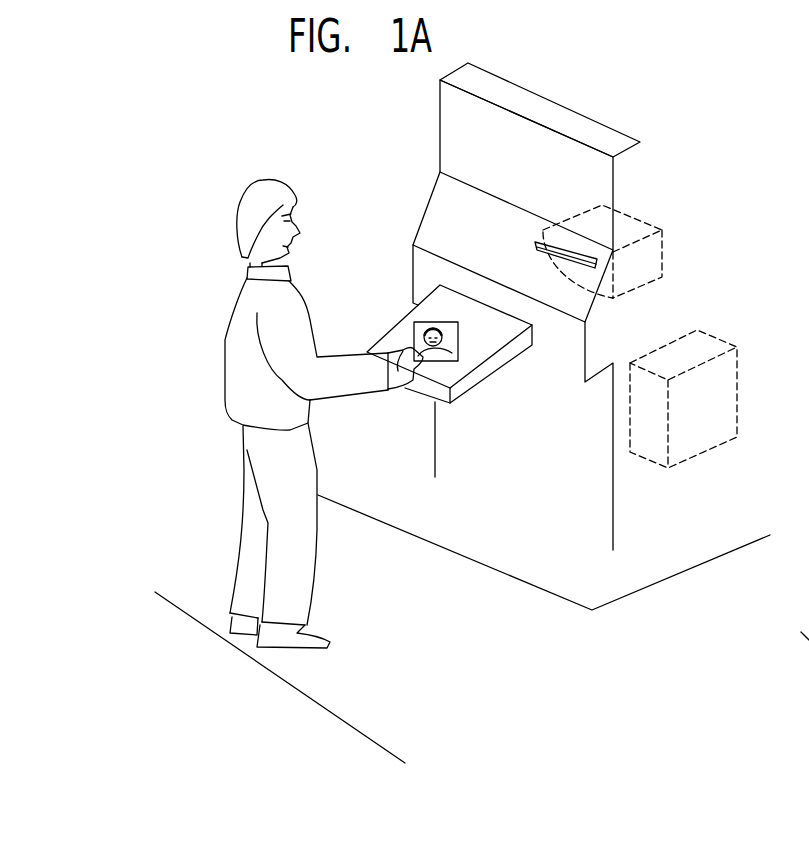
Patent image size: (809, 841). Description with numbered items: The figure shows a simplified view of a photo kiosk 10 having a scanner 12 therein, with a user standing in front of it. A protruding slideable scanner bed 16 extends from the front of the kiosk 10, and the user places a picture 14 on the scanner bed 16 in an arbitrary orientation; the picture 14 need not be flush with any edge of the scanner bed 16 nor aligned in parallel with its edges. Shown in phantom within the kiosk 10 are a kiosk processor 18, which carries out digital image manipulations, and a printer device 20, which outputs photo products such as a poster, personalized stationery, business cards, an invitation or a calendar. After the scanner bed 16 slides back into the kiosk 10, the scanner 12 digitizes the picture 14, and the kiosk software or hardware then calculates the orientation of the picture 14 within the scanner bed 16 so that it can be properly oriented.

The photo kiosk 10 is at (575, 77).
The scanner 12 is at (520, 358).
The picture 14 is at (418, 324).
The protruding slideable scanner bed 16 is at (491, 375).
The kiosk processor 18 is at (736, 413).
The printer device 20 is at (627, 218).